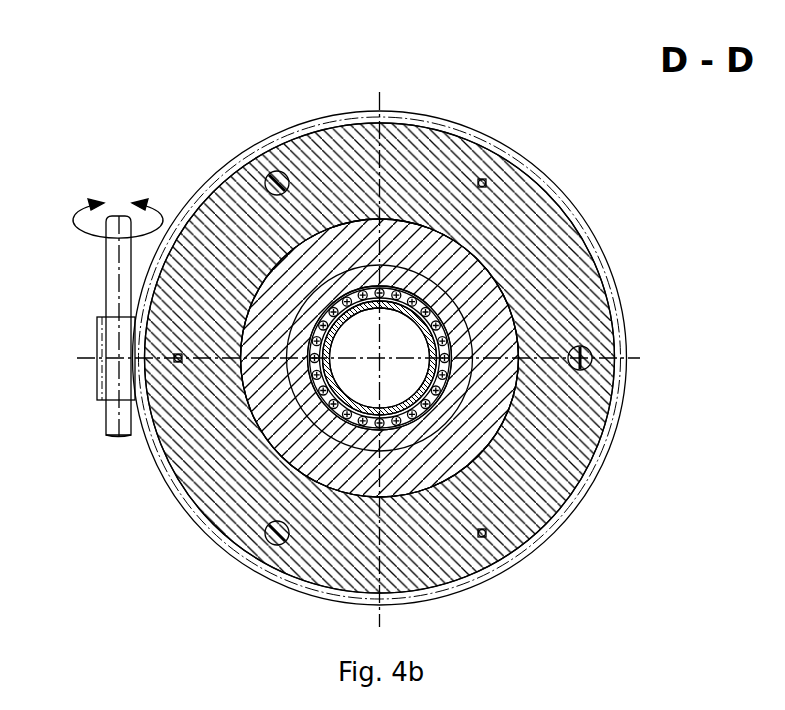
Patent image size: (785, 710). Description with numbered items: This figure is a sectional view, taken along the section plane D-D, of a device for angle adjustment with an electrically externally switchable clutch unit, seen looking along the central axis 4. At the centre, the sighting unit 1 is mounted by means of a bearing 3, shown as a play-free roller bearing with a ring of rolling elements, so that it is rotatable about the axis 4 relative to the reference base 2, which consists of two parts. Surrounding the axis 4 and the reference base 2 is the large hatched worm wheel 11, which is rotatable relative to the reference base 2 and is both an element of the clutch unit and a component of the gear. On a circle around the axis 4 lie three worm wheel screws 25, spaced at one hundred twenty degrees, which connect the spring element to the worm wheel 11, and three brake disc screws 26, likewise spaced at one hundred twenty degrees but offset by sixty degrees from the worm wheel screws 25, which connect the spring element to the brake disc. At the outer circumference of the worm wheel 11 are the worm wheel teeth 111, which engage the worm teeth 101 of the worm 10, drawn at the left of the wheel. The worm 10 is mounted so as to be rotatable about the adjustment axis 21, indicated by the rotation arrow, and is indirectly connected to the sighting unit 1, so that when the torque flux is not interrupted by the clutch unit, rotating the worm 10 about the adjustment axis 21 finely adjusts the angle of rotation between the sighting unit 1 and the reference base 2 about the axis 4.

The sighting unit 1 is at (432, 340).
The reference base 2 is at (479, 303).
The bearing 3 is at (313, 312).
The axis 4 is at (377, 310).
The worm 10 is at (117, 436).
The worm wheel 11 is at (243, 225).
The adjustment axis 21 is at (118, 207).
The worm wheel screws 25 is at (178, 362).
The brake disc screws 26 is at (582, 372).
The worm teeth 101 is at (120, 364).
The worm wheel teeth 111 is at (183, 207).